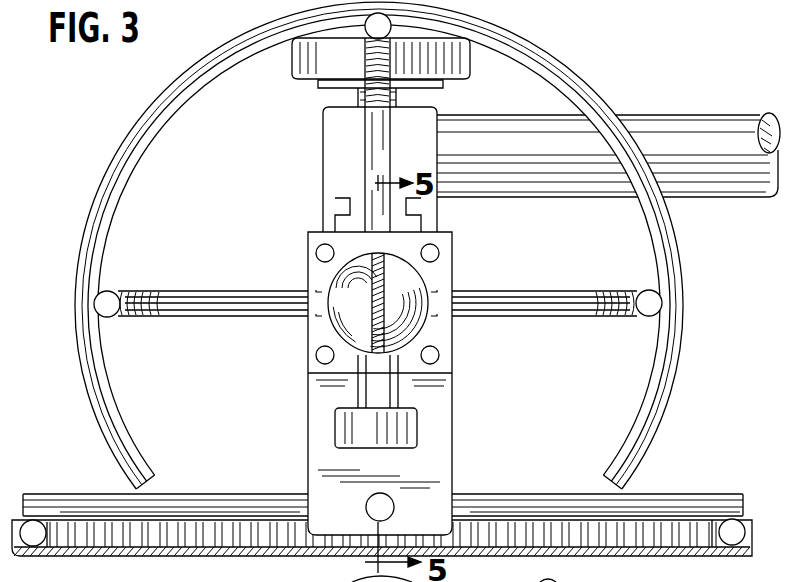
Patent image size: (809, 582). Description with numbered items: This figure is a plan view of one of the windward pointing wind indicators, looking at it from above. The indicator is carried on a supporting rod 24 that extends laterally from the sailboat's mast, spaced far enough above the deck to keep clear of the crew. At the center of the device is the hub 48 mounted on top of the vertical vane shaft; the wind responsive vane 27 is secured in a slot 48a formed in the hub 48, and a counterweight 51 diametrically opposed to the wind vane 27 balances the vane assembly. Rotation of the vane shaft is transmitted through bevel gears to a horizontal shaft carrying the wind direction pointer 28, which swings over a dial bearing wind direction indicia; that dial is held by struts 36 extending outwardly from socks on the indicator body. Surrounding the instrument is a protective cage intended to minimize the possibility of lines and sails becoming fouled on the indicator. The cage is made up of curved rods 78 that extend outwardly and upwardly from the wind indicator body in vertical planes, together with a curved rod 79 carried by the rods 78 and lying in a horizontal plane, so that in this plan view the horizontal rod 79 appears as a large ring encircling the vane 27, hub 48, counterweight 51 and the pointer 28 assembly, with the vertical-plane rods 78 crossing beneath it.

The supporting rod 24 is at (688, 138).
The wind responsive vane 27 is at (463, 578).
The wind direction pointer 28 is at (727, 557).
The strut 36 is at (178, 505).
The hub 48 is at (413, 327).
The slot 48a is at (372, 284).
The counterweight 51 is at (400, 428).
The curved rod 78 is at (365, 124).
The curved rod 79 is at (665, 348).